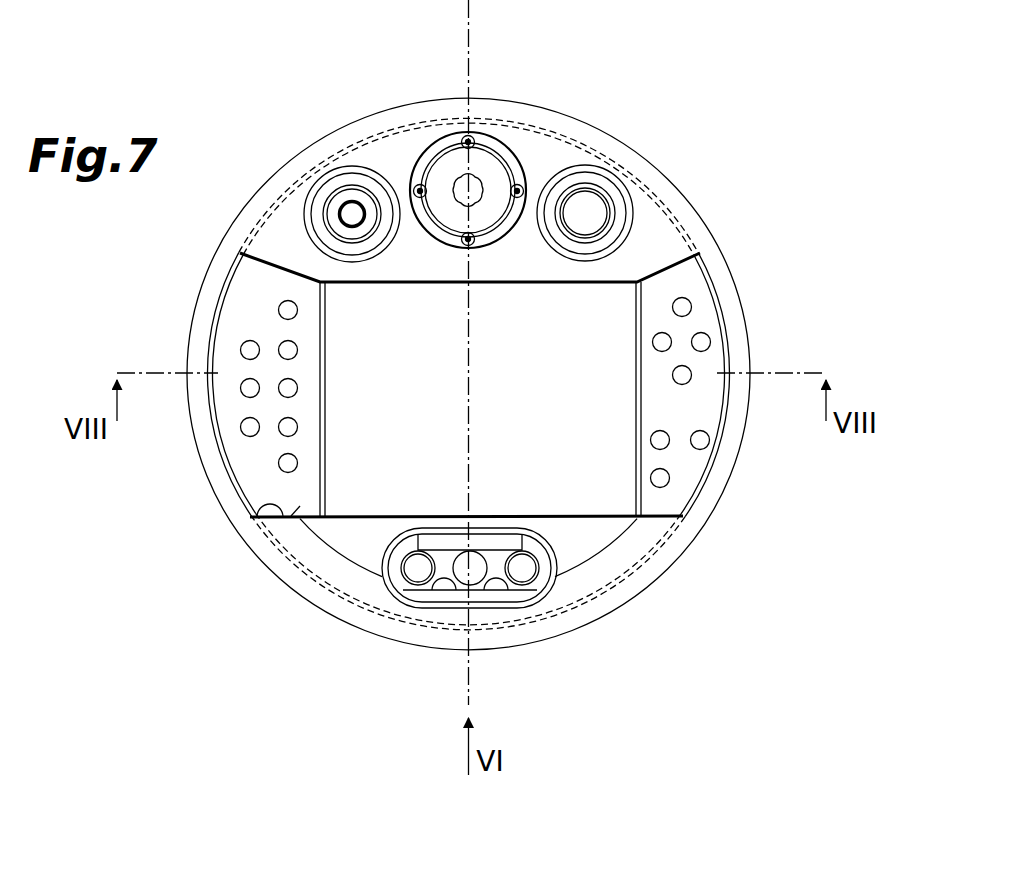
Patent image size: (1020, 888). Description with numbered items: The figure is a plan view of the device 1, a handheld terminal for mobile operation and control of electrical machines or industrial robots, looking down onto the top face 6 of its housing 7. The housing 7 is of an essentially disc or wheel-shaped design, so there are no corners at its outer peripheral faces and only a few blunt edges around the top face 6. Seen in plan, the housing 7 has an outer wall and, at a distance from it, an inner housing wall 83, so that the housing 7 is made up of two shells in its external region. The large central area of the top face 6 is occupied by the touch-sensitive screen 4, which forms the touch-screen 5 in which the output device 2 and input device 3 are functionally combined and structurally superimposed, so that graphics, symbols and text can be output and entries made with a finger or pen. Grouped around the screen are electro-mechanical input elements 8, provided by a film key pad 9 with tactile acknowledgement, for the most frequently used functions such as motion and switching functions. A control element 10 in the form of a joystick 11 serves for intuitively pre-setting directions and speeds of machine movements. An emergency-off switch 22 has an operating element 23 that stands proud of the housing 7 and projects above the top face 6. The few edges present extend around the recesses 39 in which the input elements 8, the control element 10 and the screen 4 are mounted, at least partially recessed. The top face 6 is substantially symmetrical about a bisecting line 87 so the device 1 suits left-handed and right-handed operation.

The device 1 is at (716, 95).
The output device 2 is at (569, 503).
The input device 3 is at (596, 494).
The touch-sensitive screen 4 is at (356, 503).
The touch-screen 5 is at (361, 538).
The top face 6 is at (636, 252).
The housing 7 is at (722, 267).
The input elements 8 is at (350, 213).
The film key pad 9 is at (233, 315).
The control element 10 is at (500, 165).
The joystick 11 is at (457, 187).
The emergency-off switch 22 is at (607, 206).
The operating element 23 is at (588, 205).
The recesses 39 is at (312, 197).
The inner housing wall 83 is at (660, 547).
The bisecting line 87 is at (473, 19).